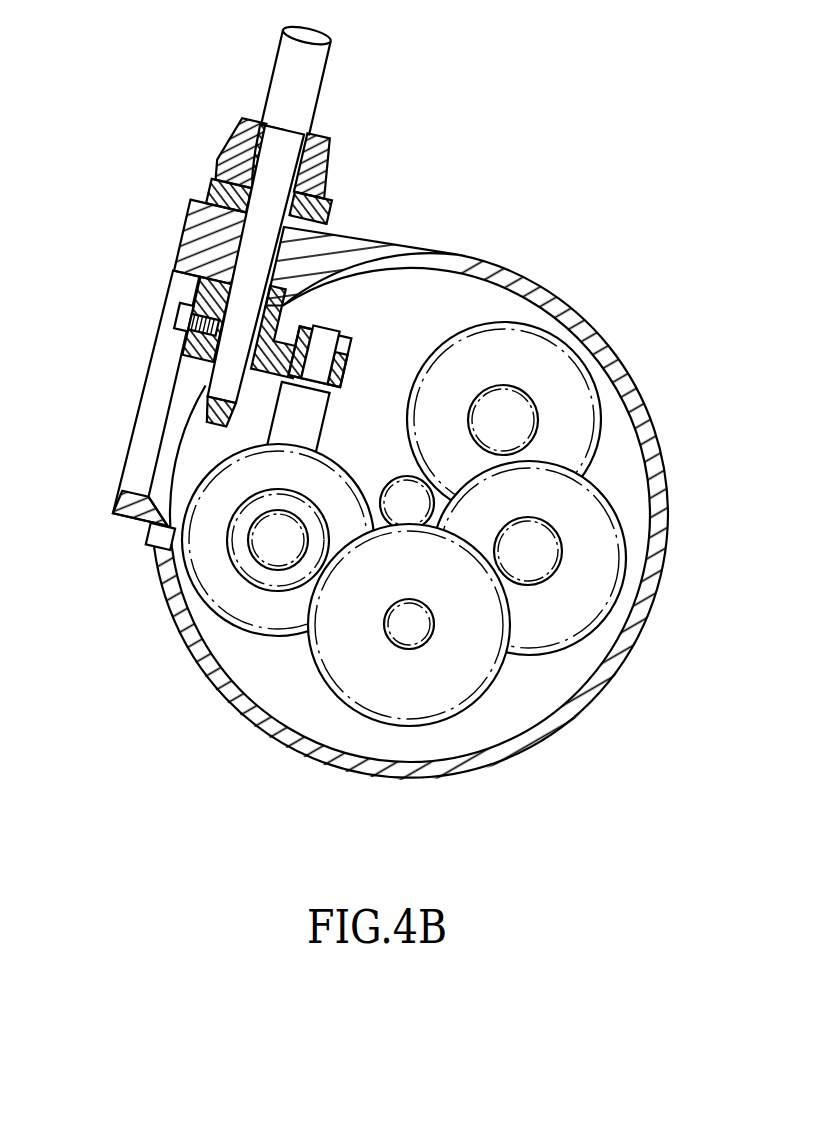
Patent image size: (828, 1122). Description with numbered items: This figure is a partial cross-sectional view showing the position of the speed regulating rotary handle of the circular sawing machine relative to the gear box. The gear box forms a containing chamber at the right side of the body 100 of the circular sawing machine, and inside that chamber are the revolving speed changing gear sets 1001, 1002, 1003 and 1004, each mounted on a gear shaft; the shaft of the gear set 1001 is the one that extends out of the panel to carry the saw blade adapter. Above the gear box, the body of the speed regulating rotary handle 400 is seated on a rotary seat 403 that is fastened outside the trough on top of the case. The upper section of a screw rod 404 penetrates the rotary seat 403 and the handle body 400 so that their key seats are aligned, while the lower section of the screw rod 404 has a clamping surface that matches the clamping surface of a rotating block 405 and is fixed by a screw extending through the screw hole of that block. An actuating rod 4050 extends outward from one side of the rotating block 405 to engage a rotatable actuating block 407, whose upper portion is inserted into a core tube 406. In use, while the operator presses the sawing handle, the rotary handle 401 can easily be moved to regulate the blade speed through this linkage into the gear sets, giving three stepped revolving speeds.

The body of the circular sawing machine 100 is at (527, 290).
The rotary handle 401 is at (316, 68).
The speed regulating rotary handle body 400 is at (318, 175).
The rotary seat 403 is at (225, 192).
The screw rod 404 is at (252, 232).
The rotating block 405 is at (210, 302).
The actuating rod 4050 is at (210, 380).
The core tube 406 is at (337, 345).
The rotatable actuating block 407 is at (340, 393).
The revolving speed changing gear set 1001 is at (215, 582).
The revolving speed changing gear set 1002 is at (588, 393).
The revolving speed changing gear set 1003 is at (607, 595).
The revolving speed changing gear set 1004 is at (372, 695).